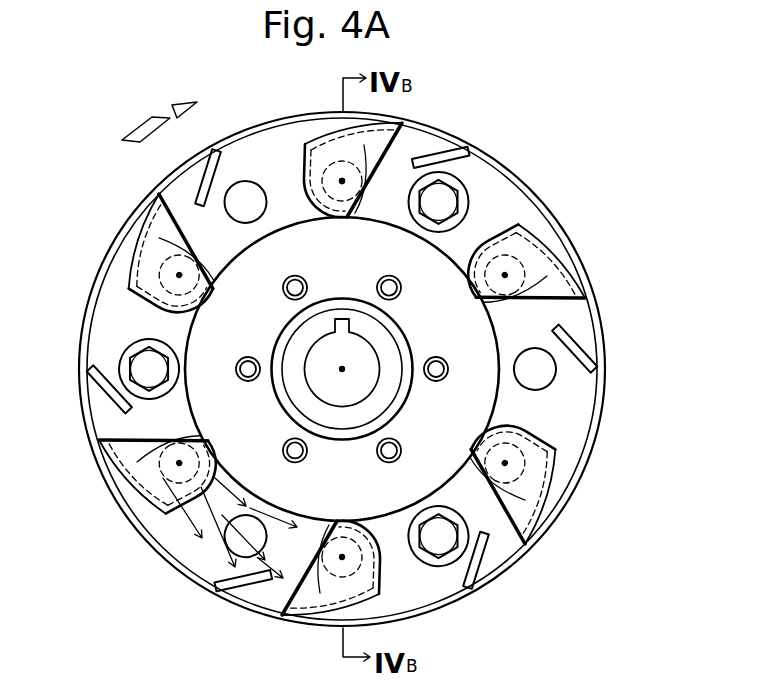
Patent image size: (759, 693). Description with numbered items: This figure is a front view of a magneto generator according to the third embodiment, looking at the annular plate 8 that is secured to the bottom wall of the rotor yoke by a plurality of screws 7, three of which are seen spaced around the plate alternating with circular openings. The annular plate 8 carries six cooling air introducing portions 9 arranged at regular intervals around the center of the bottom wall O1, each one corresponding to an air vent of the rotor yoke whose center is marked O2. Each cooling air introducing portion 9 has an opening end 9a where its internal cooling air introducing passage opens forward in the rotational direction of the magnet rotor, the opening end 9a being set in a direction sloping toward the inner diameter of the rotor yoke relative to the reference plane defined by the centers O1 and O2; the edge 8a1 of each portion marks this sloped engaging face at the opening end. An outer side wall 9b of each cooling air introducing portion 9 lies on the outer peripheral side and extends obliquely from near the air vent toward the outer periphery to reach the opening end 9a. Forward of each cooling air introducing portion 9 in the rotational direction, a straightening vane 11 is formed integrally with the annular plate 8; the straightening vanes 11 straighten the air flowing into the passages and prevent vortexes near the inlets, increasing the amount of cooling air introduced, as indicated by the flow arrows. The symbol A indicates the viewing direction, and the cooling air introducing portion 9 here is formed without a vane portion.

The screw 7 is at (467, 192).
The annular plate 8 is at (577, 398).
The engaging surface of ratchet tooth 8a1 is at (402, 128).
The cooling air introducing portion 9 is at (289, 152).
The opening end 9a is at (382, 152).
The outer side wall 9b is at (380, 123).
The straightening vane 11 is at (221, 147).
The center of the bottom wall O1 is at (343, 368).
The center of the air vent O2 is at (342, 181).
The rotation direction A is at (172, 112).